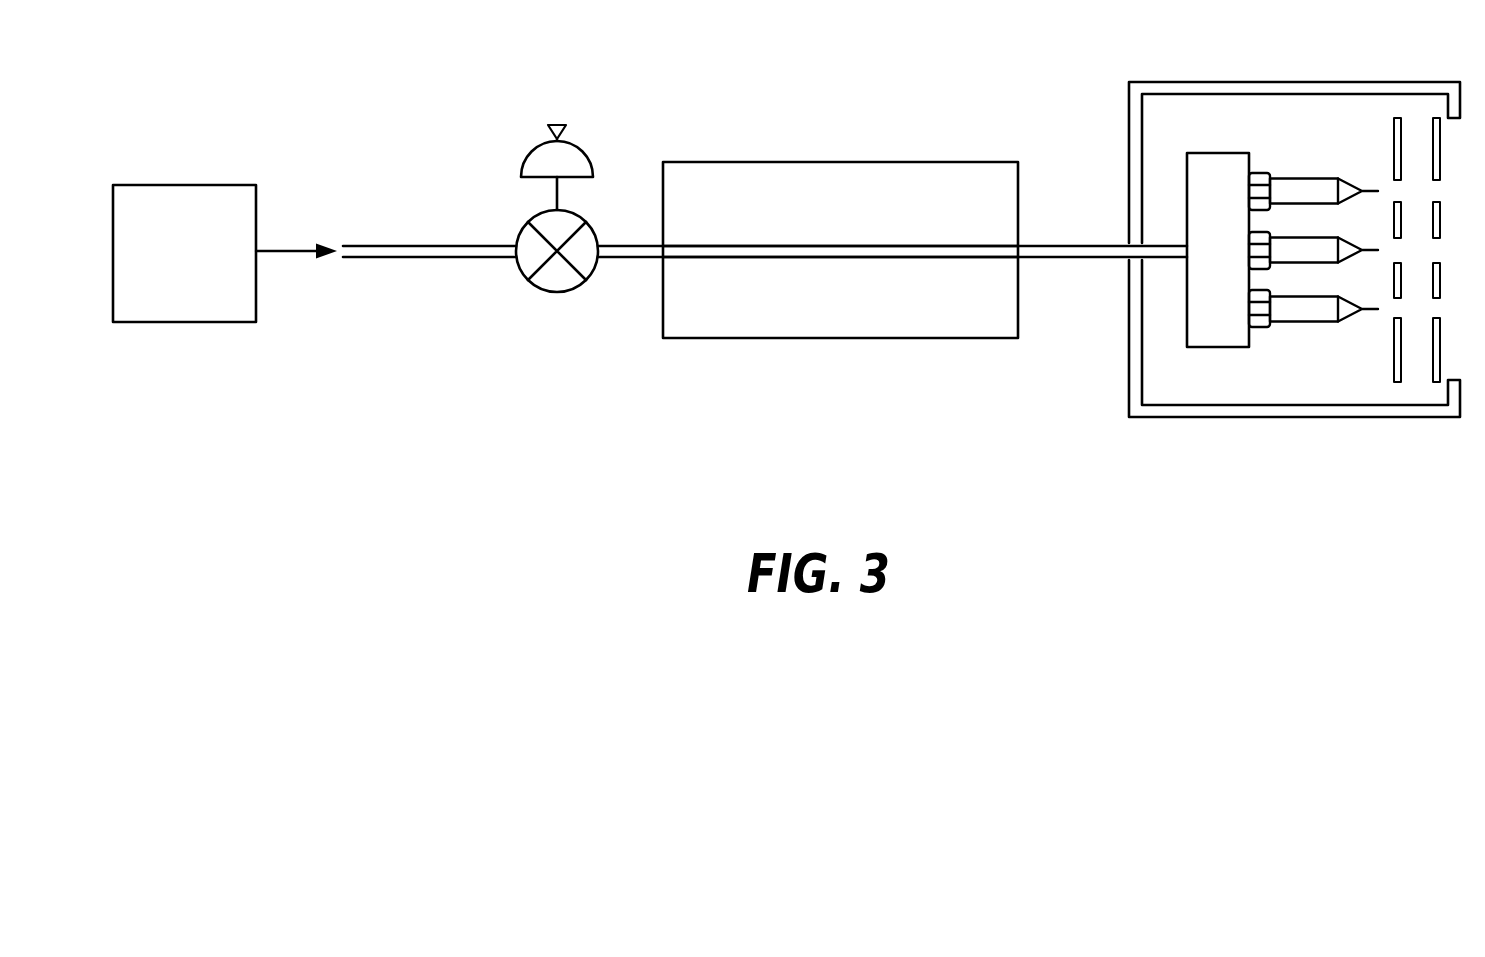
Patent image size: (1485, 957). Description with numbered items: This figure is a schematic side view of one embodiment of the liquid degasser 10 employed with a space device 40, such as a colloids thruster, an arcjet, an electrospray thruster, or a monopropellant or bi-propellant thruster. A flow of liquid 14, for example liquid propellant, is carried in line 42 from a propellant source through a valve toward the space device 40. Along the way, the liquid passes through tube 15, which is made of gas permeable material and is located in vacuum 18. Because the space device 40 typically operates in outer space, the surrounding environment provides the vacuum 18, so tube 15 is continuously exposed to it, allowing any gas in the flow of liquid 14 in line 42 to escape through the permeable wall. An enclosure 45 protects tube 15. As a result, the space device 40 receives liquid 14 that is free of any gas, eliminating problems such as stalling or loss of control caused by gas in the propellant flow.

The liquid 14 is at (171, 185).
The line 42 is at (632, 258).
The enclosure 45 is at (940, 338).
The vacuum 18 is at (820, 162).
The tube 15 is at (902, 258).
The liquid degasser 10 is at (852, 225).
The space device 40 is at (1173, 82).